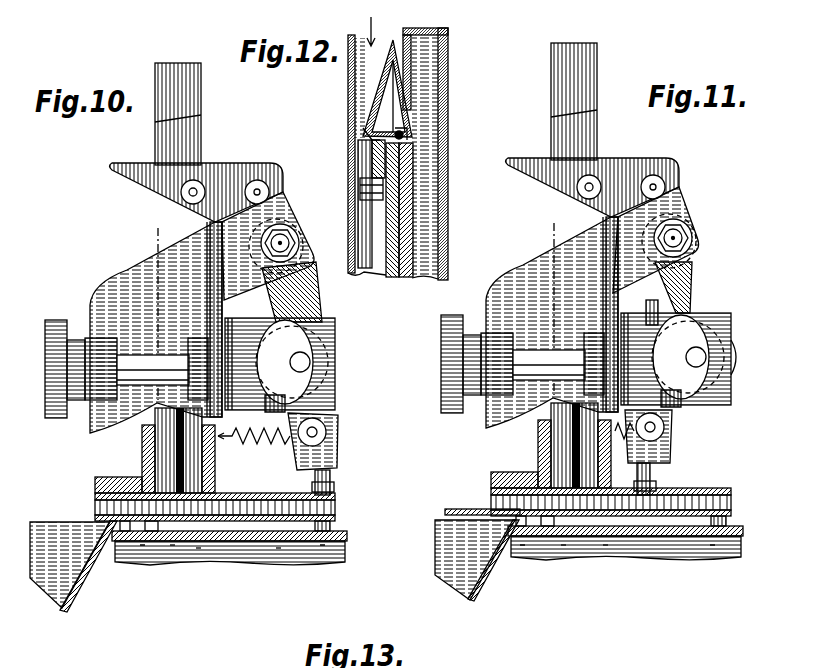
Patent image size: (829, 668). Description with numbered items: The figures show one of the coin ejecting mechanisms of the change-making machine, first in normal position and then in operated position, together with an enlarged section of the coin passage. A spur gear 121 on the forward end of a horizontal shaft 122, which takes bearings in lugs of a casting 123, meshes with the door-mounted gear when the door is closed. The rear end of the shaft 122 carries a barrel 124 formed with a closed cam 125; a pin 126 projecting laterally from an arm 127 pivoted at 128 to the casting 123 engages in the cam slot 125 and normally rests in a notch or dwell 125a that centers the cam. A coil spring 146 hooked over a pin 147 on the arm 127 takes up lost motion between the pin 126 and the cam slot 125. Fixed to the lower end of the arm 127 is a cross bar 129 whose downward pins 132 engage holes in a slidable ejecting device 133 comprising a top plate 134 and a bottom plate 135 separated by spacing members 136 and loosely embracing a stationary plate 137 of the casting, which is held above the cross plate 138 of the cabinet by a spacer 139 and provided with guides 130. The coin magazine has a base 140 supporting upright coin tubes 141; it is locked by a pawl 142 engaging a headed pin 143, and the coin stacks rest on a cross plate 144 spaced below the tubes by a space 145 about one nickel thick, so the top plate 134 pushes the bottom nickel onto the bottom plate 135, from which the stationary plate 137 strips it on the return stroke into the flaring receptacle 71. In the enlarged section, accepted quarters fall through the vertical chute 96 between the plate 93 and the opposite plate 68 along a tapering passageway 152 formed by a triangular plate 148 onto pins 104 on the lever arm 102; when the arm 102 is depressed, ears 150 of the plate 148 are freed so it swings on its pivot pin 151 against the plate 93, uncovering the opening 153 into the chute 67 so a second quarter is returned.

In FIG. 10, the coin tubes 141 is at (203, 102).
In FIG. 11, the coin tubes 141 is at (593, 101).
In FIG. 10, the pawl 142 is at (130, 165).
In FIG. 11, the pawl 142 is at (593, 173).
In FIG. 10, the headed pin 143 is at (201, 184).
In FIG. 11, the headed pin 143 is at (621, 163).
In FIG. 10, the casting 123 is at (128, 283).
In FIG. 11, the casting 123 is at (552, 322).
In FIG. 10, the spur gear 121 is at (60, 318).
In FIG. 10, the shaft 122 is at (138, 356).
In FIG. 10, the pivot 128 is at (286, 241).
In FIG. 11, the pivot 128 is at (687, 235).
In FIG. 10, the arm 127 is at (303, 298).
In FIG. 11, the arm 127 is at (680, 250).
In FIG. 10, the barrel 124 is at (240, 318).
In FIG. 11, the barrel 124 is at (693, 346).
In FIG. 10, the closed cam 125 is at (316, 322).
In FIG. 11, the closed cam 125 is at (711, 357).
In FIG. 10, the pin 126 is at (330, 347).
In FIG. 11, the pin 126 is at (668, 325).
In FIG. 10, the notch or dwell 125a is at (335, 365).
In FIG. 11, the notch or dwell 125a is at (722, 373).
In FIG. 10, the pin 147 is at (326, 432).
In FIG. 11, the pin 147 is at (668, 436).
In FIG. 10, the coil spring 146 is at (255, 444).
In FIG. 11, the coil spring 146 is at (624, 431).
In FIG. 10, the cross bar or arm 129 is at (332, 478).
In FIG. 11, the cross bar or arm 129 is at (678, 475).
In FIG. 10, the pins 132 is at (336, 485).
In FIG. 11, the pins 132 is at (671, 479).
In FIG. 10, the base 140 is at (142, 440).
In FIG. 11, the base 140 is at (554, 445).
In FIG. 10, the space 145 is at (142, 468).
In FIG. 11, the space 145 is at (506, 469).
In FIG. 10, the top plate 134 is at (232, 493).
In FIG. 10, the guides 130 is at (270, 493).
In FIG. 11, the guides 130 is at (621, 487).
In FIG. 10, the spacing members 136 is at (336, 500).
In FIG. 11, the spacing members 136 is at (651, 511).
In FIG. 10, the slidable ejecting device 133 is at (351, 520).
In FIG. 11, the slidable ejecting device 133 is at (646, 503).
In FIG. 10, the base 138 is at (240, 548).
In FIG. 11, the base 138 is at (626, 562).
In FIG. 10, the spacer 139 is at (141, 545).
In FIG. 11, the spacer 139 is at (619, 567).
In FIG. 10, the stationary plate 137 is at (172, 545).
In FIG. 11, the stationary plate 137 is at (562, 567).
In FIG. 10, the cross plate 144 is at (198, 548).
In FIG. 11, the cross plate 144 is at (609, 567).
In FIG. 10, the bottom plate 135 is at (278, 548).
In FIG. 11, the bottom plate 135 is at (482, 499).
In FIG. 10, the flaring receptacle 71 is at (66, 604).
In FIG. 12, the opening 153 is at (420, 62).
In FIG. 12, the chute 67 is at (432, 85).
In FIG. 12, the tapering passageway 152 is at (360, 86).
In FIG. 12, the plate 148 is at (372, 110).
In FIG. 12, the ears 150 is at (378, 128).
In FIG. 12, the pivot pin 151 is at (410, 134).
In FIG. 12, the arm 102 is at (372, 152).
In FIG. 12, the plate 93 is at (360, 172).
In FIG. 12, the pins 104 is at (365, 250).
In FIG. 12, the plate 68 is at (412, 193).
In FIG. 12, the vertical passageway or chute 96 is at (375, 272).